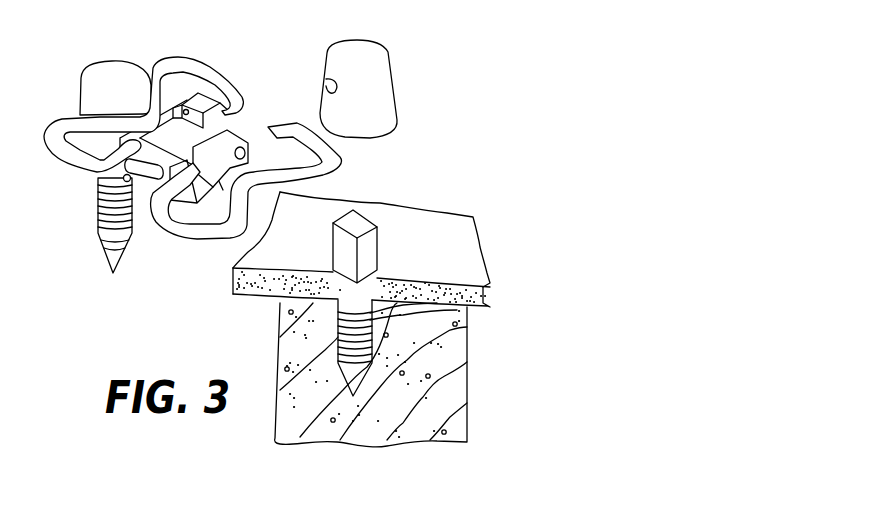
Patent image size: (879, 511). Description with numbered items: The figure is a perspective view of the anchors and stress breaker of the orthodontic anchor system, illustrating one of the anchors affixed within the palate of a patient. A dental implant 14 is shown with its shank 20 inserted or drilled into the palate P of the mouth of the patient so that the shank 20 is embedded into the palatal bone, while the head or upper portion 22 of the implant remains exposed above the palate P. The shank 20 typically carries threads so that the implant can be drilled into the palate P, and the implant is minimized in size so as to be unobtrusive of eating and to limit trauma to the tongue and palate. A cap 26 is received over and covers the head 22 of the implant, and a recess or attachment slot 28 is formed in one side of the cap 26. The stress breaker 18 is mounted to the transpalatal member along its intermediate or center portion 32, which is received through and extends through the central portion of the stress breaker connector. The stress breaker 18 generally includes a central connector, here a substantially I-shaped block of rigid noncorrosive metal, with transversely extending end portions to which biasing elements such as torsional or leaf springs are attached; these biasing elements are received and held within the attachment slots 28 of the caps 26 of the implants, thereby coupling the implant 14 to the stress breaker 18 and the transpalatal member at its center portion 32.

The dental implant 14 is at (86, 68).
The stress breaker 18 is at (231, 107).
The intermediate or center portion 32 is at (243, 107).
The recess or attachment slot 28 is at (326, 84).
The cap 26 is at (398, 73).
The head or upper portion 22 is at (362, 218).
The shank 20 is at (463, 313).
The palate P is at (478, 242).
The base B is at (468, 366).